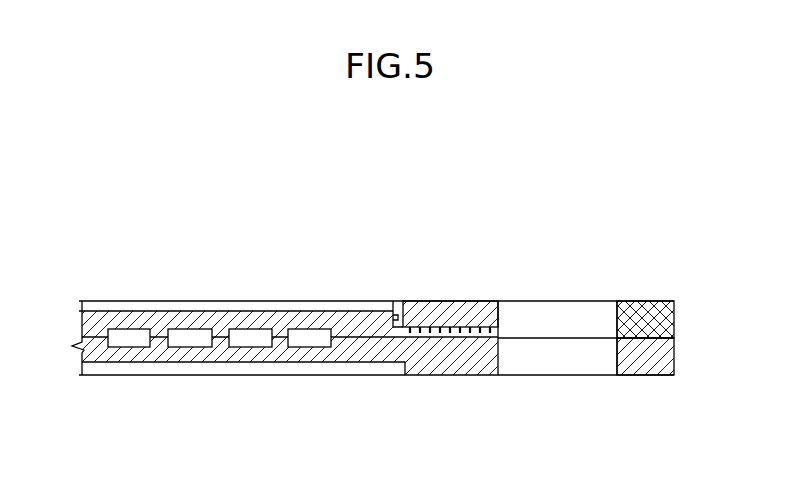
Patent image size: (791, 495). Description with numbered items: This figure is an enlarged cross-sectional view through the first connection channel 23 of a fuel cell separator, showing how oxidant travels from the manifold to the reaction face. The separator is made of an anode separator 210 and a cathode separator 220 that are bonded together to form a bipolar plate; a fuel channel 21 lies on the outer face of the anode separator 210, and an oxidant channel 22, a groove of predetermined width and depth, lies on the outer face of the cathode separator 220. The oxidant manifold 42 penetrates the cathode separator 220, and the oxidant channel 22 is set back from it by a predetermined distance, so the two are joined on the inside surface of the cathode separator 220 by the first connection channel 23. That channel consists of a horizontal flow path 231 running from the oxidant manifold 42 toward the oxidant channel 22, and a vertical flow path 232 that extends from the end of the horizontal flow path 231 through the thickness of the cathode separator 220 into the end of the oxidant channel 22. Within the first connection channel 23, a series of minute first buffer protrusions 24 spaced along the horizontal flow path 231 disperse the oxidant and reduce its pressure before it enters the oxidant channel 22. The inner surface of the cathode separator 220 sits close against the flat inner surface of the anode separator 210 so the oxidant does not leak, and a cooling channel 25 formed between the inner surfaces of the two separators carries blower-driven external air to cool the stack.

The fuel channel 21 is at (236, 375).
The oxidant channel 22 is at (218, 300).
The first connection channel 23 is at (436, 275).
The horizontal flow path 231 is at (450, 292).
The vertical flow path 232 is at (393, 301).
The first buffer protrusions 24 is at (440, 334).
The cooling channel 25 is at (132, 340).
The oxidant manifold 42 is at (556, 301).
The anode separator 210 is at (650, 375).
The cathode separator 220 is at (645, 301).